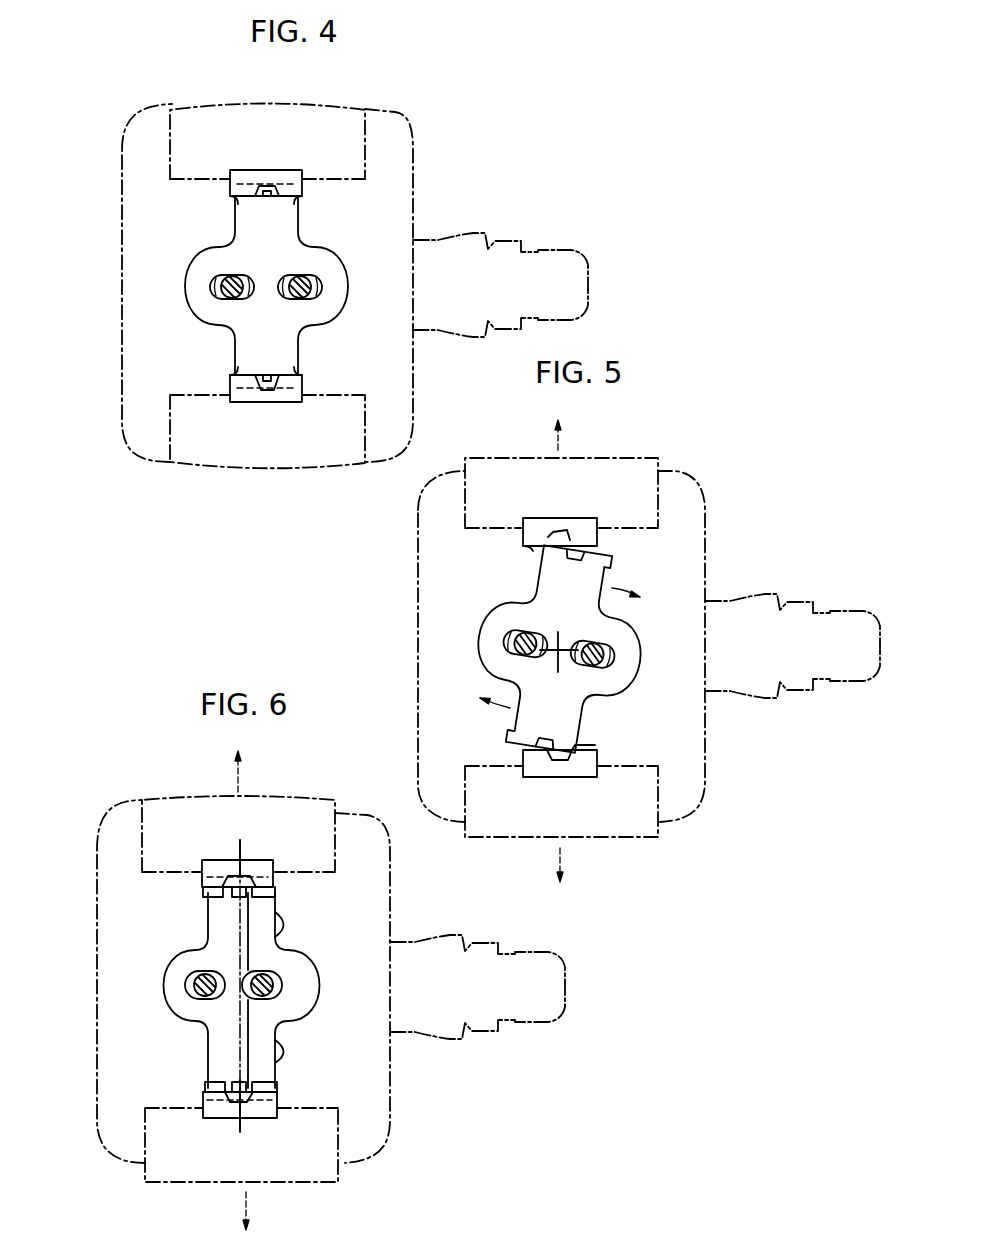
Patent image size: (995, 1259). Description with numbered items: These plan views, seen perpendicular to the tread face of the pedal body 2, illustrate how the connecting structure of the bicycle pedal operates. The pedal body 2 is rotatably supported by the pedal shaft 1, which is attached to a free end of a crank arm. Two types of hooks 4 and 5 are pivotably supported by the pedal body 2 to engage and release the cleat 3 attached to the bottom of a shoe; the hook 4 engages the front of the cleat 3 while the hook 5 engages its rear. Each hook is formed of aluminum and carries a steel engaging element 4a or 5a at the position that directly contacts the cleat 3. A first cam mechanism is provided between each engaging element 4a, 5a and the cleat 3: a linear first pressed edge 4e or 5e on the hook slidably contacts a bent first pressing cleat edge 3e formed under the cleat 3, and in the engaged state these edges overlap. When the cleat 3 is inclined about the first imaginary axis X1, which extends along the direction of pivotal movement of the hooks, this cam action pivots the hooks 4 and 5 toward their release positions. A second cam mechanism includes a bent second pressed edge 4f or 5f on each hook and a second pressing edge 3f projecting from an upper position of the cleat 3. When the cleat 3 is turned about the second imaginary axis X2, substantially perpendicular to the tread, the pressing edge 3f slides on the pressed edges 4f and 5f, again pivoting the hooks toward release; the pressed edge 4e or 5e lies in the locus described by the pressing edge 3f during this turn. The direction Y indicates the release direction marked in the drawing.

In FIG. 4, the pedal shaft 1 is at (560, 252).
In FIG. 5, the pedal shaft 1 is at (850, 613).
In FIG. 6, the pedal shaft 1 is at (548, 952).
In FIG. 4, the pedal body 2 is at (408, 119).
In FIG. 5, the pedal body 2 is at (699, 482).
In FIG. 6, the pedal body 2 is at (386, 857).
In FIG. 4, the cleat 3 is at (183, 288).
In FIG. 5, the cleat 3 is at (478, 645).
In FIG. 6, the cleat 3 is at (166, 998).
In FIG. 4, the hook 4 is at (305, 101).
In FIG. 5, the hook 4 is at (600, 457).
In FIG. 6, the hook 4 is at (313, 797).
In FIG. 4, the hook 5 is at (340, 465).
In FIG. 5, the hook 5 is at (650, 838).
In FIG. 6, the hook 5 is at (328, 1180).
In FIG. 4, the first pressing cleat edge 3e is at (292, 176).
In FIG. 5, the first pressing cleat edge 3e is at (608, 560).
In FIG. 6, the first pressing cleat edge 3e is at (244, 917).
In FIG. 4, the second pressing edge (cleat contact portion) 3f is at (268, 186).
In FIG. 5, the second pressing edge (cleat contact portion) 3f is at (573, 555).
In FIG. 6, the second pressing edge (cleat contact portion) 3f is at (233, 890).
In FIG. 4, the engaging element 4a is at (303, 185).
In FIG. 5, the engaging element 4a is at (587, 522).
In FIG. 6, the engaging element 4a is at (277, 880).
In FIG. 4, the first pressed edge (hooking edge) 4e is at (247, 194).
In FIG. 5, the first pressed edge (hooking edge) 4e is at (532, 550).
In FIG. 6, the first pressed edge (hooking edge) 4e is at (213, 887).
In FIG. 4, the second pressed edge (hook contact portion) 4f is at (270, 194).
In FIG. 5, the second pressed edge (hook contact portion) 4f is at (557, 528).
In FIG. 6, the second pressed edge (hook contact portion) 4f is at (237, 877).
In FIG. 4, the engaging element 5a is at (305, 383).
In FIG. 5, the engaging element 5a is at (587, 773).
In FIG. 6, the engaging element 5a is at (270, 1118).
In FIG. 4, the first pressed edge (hooking edge) 5e is at (255, 383).
In FIG. 5, the first pressed edge (hooking edge) 5e is at (567, 755).
In FIG. 6, the first pressed edge (hooking edge) 5e is at (263, 1087).
In FIG. 4, the second pressed edge (hook contact portion) 5f is at (273, 390).
In FIG. 5, the second pressed edge (hook contact portion) 5f is at (553, 755).
In FIG. 6, the second pressed edge (hook contact portion) 5f is at (243, 1103).
In FIG. 6, the first imaginary axis X1 is at (242, 848).
In FIG. 5, the second imaginary axis X2 is at (560, 645).
In FIG. 6, the release direction Y is at (244, 1243).